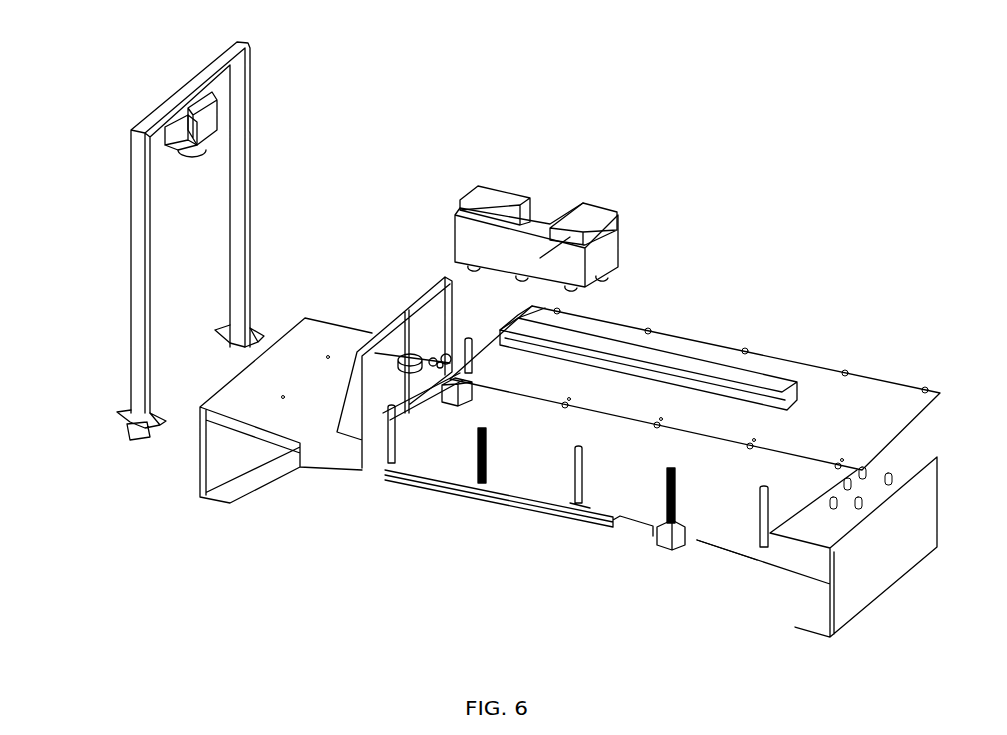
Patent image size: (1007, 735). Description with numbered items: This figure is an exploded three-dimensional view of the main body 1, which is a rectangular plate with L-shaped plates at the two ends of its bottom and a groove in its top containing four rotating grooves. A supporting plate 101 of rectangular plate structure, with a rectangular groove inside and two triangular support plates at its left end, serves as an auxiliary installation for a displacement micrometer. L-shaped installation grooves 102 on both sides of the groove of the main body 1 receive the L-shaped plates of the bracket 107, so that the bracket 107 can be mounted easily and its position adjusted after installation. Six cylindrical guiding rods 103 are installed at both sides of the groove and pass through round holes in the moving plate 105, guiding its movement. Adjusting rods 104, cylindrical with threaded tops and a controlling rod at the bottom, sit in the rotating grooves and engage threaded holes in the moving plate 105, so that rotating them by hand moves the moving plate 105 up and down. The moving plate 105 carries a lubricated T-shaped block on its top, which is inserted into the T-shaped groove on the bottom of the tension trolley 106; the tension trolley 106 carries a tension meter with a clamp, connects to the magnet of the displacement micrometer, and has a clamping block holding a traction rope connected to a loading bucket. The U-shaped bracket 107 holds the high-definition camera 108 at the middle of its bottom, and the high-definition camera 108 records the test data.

The main body 1 is at (337, 463).
The supporting plate 101 is at (350, 418).
The installation grooves 102 is at (557, 508).
The guiding rods 103 is at (588, 515).
The adjusting rods 104 is at (673, 540).
The moving plate 105 is at (681, 339).
The tension trolley 106 is at (607, 250).
The bracket 107 is at (137, 228).
The high-definition camera 108 is at (203, 128).